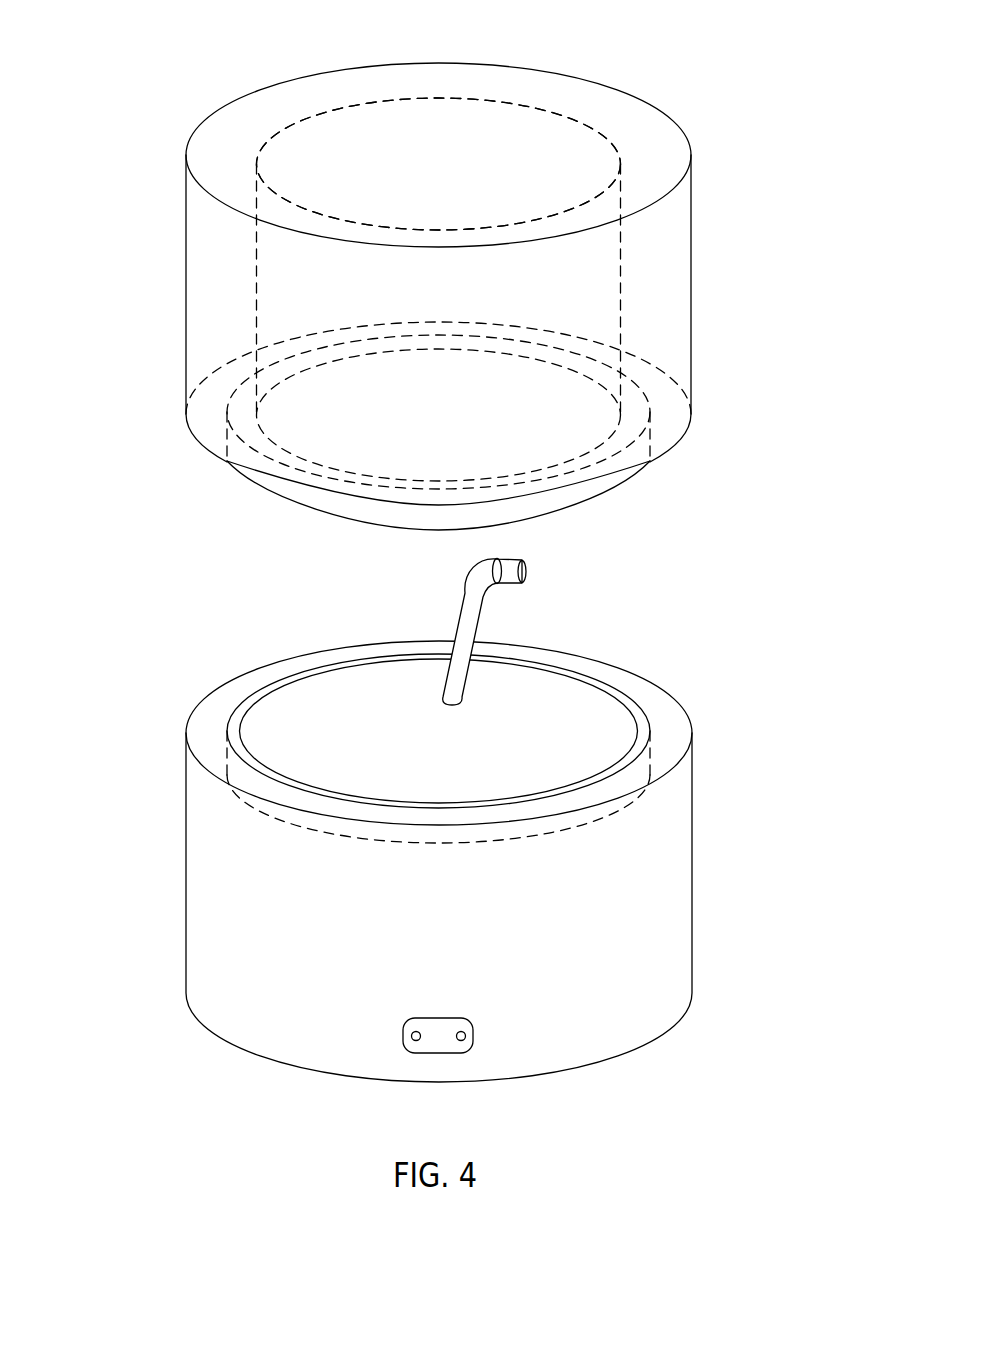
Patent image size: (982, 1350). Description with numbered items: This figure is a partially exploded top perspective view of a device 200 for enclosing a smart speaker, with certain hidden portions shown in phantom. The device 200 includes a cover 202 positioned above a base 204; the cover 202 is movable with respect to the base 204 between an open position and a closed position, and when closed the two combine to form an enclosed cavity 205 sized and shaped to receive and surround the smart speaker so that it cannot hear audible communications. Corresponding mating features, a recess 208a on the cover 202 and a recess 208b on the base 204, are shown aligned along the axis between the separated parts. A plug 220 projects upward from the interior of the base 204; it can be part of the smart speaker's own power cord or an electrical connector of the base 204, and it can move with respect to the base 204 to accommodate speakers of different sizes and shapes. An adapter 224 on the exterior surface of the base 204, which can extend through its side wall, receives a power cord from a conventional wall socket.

The device 200 is at (436, 565).
The cover 202 is at (436, 268).
The base 204 is at (434, 840).
The enclosed cavity 205 is at (489, 146).
The recess 208a is at (246, 326).
The recess 208b is at (227, 712).
The plug 220 is at (468, 591).
The adapter 224 is at (436, 1053).